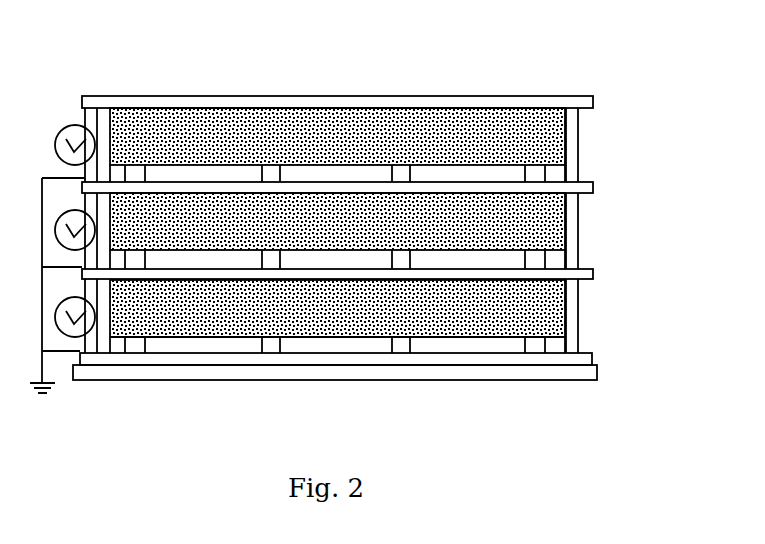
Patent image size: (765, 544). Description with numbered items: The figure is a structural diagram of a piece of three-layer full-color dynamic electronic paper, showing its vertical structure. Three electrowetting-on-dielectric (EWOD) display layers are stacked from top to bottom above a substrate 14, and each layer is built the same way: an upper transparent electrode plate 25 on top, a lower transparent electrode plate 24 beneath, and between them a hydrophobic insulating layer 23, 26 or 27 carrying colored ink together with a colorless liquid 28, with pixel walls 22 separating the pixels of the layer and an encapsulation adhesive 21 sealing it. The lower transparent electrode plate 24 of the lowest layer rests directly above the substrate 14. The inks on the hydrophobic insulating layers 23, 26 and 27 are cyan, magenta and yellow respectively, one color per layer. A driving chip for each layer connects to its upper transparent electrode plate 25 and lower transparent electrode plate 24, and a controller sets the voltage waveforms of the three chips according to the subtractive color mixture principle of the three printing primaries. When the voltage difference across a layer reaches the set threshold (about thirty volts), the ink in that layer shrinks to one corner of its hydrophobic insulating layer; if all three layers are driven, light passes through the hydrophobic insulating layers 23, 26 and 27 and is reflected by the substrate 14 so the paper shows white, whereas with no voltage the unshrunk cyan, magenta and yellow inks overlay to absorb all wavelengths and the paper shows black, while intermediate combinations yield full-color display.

The substrate 14 is at (359, 239).
The encapsulation adhesive 21 is at (573, 338).
The pixel wall 22 is at (402, 340).
The hydrophobic insulating layer 23 is at (243, 343).
The lower transparent electrode plate 24 is at (118, 358).
The upper transparent electrode plate 25 is at (133, 108).
The hydrophobic insulating layer 26 is at (292, 175).
The hydrophobic insulating layer 27 is at (436, 266).
The colorless liquid 28 is at (541, 143).